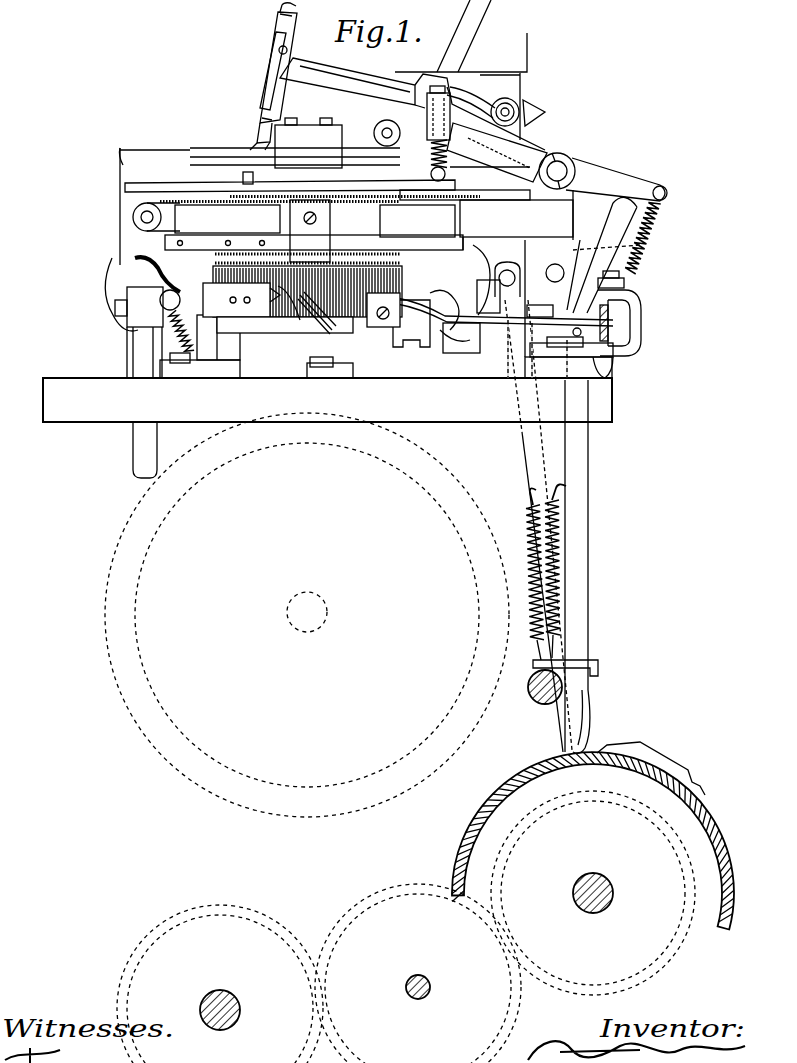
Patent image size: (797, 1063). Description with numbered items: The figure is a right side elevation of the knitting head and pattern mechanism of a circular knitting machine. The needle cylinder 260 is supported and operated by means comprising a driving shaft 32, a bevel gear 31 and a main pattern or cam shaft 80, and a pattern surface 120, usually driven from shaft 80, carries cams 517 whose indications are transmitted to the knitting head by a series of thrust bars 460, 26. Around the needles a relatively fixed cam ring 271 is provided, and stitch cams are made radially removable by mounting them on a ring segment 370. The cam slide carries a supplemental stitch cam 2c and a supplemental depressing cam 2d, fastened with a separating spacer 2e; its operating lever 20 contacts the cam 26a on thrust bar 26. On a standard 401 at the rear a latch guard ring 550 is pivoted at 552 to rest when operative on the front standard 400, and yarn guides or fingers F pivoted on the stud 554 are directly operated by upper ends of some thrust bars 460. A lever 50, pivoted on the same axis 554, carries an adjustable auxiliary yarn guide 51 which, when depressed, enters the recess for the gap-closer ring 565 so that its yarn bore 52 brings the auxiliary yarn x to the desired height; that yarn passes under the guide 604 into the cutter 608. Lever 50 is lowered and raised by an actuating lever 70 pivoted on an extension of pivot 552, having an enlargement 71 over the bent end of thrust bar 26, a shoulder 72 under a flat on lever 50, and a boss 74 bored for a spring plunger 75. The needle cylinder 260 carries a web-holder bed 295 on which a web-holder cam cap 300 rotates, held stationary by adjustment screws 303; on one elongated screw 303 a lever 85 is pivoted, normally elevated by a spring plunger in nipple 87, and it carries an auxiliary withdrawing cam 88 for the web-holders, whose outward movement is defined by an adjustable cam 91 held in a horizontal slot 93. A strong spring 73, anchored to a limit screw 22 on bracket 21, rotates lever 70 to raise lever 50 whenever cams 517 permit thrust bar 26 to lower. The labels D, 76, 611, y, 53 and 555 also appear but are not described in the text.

The base D is at (60, 378).
The bevel gear 31 is at (420, 458).
The driving shaft 32 is at (327, 597).
The thrust bar 26 is at (578, 452).
The thrust bars 460 is at (560, 430).
The cams 517 is at (650, 744).
The pattern surface 120 is at (705, 795).
The cam shaft 76 is at (600, 874).
The main pattern or cam shaft 80 is at (220, 990).
The lever 50 is at (276, 52).
The auxiliary yarn guide 51 is at (265, 78).
The yarn bore 52 is at (278, 12).
The auxiliary yarn x is at (300, 4).
The boss 74 is at (398, 78).
The bar 611 is at (320, 96).
The cutter 608 is at (262, 140).
The gap-closer ring 565 is at (192, 150).
The latch guard ring 550 is at (117, 175).
The nipple 87 is at (235, 175).
The lever 85 is at (150, 188).
The adjustment screw 303 is at (133, 217).
The adjustable cam 91 is at (265, 225).
The horizontal slot 93 is at (194, 212).
The web-holder cam cap 300 is at (165, 240).
The web-holder bed 295 is at (160, 245).
The auxiliary withdrawing cam 88 is at (325, 222).
The needle cylinder 260 is at (392, 284).
The spring plunger 75 is at (452, 175).
The shoulder 72 is at (497, 152).
The pivot 552 is at (561, 160).
The actuating lever 70 is at (592, 178).
The enlargement 71 is at (632, 180).
The guide 604 is at (490, 48).
The reference point y is at (490, 20).
The rod 53 is at (495, 78).
The spring 555 is at (518, 90).
The stud 554 is at (522, 100).
The yarn guides F is at (541, 112).
The spring 73 is at (655, 222).
The standard 401 is at (633, 246).
The limit screw 22 is at (626, 286).
The bracket 21 is at (641, 316).
The cam 26a is at (612, 372).
The operating lever 20 is at (445, 350).
The standard 400 is at (112, 282).
The cam ring 271 is at (258, 378).
The supplemental depressing cam 2d is at (288, 330).
The separating spacer 2e is at (330, 330).
The supplemental stitch cam 2c is at (384, 330).
The ring segment 370 is at (335, 378).